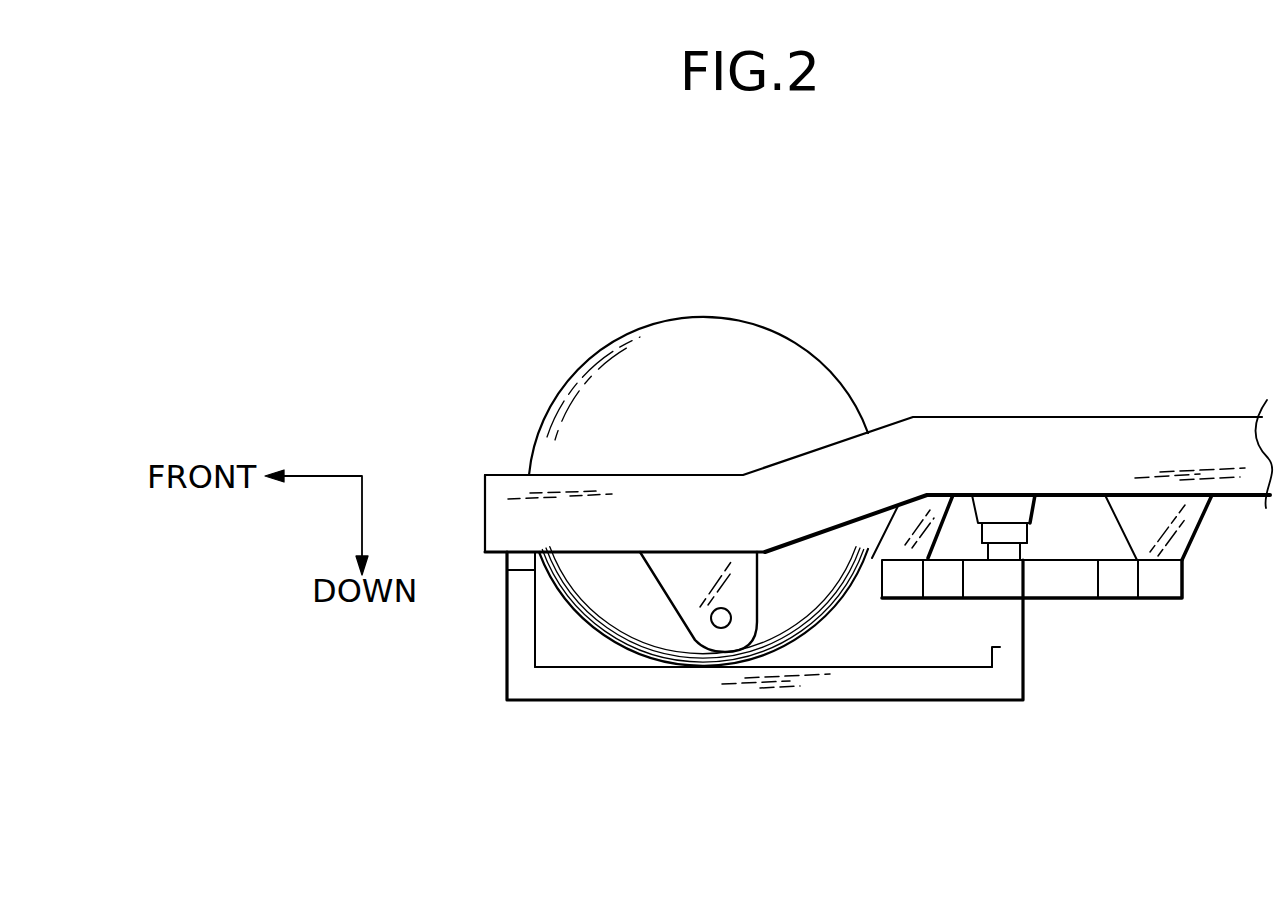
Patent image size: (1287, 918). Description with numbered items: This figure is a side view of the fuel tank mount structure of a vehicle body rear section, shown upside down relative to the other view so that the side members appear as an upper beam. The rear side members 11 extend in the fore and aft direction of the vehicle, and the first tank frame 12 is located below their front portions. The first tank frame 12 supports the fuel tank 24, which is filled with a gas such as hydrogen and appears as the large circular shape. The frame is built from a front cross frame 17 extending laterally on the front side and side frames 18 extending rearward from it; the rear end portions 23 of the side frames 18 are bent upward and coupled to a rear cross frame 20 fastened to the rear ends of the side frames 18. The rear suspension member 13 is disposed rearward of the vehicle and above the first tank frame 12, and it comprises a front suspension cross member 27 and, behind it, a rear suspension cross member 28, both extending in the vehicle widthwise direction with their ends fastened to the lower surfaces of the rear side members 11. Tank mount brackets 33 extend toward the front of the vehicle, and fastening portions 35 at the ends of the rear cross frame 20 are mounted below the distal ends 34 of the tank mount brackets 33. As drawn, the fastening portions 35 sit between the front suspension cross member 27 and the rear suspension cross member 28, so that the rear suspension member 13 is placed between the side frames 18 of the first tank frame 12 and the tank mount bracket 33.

The rear side member 11 is at (935, 450).
The first tank frame 12 is at (608, 701).
The rear suspension member 13 is at (1067, 600).
The front cross frame 17 is at (512, 627).
The side frame 18 is at (712, 688).
The rear cross frame 20 is at (1027, 532).
The rear end portion 23 is at (1012, 647).
The fuel tank 24 is at (700, 318).
The front suspension cross member 27 is at (942, 582).
The rear suspension cross member 28 is at (1118, 580).
The tank mount bracket 33 is at (1000, 512).
The distal end 34 is at (1081, 419).
The fastening portion 35 is at (1008, 548).